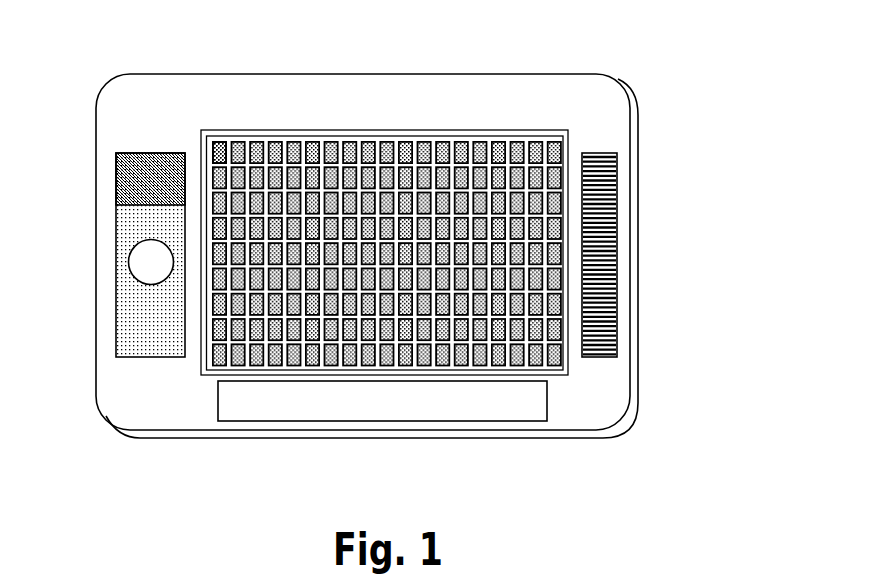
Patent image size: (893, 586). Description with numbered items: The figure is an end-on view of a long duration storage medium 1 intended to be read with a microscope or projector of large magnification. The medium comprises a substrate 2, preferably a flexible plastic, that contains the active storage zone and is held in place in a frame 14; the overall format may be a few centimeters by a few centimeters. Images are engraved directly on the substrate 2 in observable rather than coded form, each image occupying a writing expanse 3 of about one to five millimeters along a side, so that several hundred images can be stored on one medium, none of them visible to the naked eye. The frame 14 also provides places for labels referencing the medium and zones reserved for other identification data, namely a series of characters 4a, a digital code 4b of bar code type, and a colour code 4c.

The long duration storage medium 1 is at (627, 123).
The frame 14 is at (497, 115).
The substrate 2 is at (555, 368).
The writing expanse 3 is at (217, 147).
The series of characters 4a is at (228, 406).
The digital code 4b is at (600, 246).
The colour code 4c is at (143, 314).